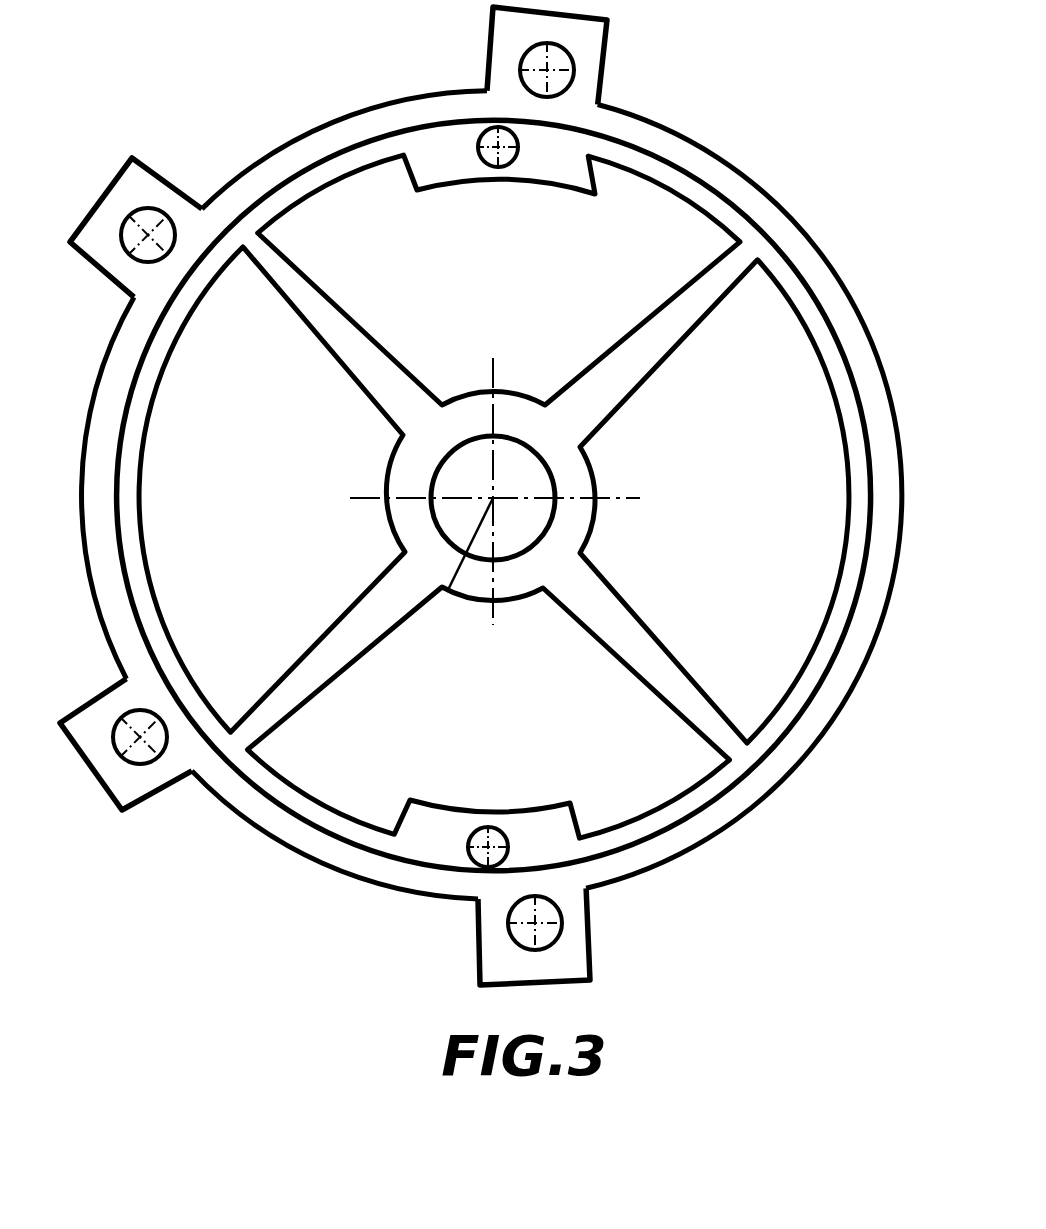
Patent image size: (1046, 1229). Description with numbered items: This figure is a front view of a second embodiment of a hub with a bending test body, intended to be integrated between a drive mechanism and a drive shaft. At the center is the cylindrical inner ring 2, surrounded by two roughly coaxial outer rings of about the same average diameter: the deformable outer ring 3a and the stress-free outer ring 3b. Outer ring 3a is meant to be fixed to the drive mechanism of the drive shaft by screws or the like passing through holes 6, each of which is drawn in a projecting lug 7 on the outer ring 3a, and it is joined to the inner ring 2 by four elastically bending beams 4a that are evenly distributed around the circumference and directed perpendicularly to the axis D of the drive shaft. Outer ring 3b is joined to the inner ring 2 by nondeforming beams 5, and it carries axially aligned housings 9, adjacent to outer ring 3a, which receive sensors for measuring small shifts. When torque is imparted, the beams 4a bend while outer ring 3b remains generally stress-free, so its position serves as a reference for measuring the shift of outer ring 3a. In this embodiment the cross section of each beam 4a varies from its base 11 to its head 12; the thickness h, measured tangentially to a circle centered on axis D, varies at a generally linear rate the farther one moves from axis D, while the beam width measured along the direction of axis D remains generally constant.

The inner ring 2 is at (612, 478).
The outer ring 3a is at (738, 150).
The outer ring 3b is at (682, 198).
The elastically bending beams 4a is at (362, 334).
The nondeforming beams 5 is at (494, 496).
The holes 6 is at (574, 64).
The mounting lugs 7 is at (507, 26).
The housings 9 is at (492, 162).
The base 11 is at (548, 402).
The head 12 is at (243, 249).
The thickness h is at (238, 322).
The axis D is at (465, 569).